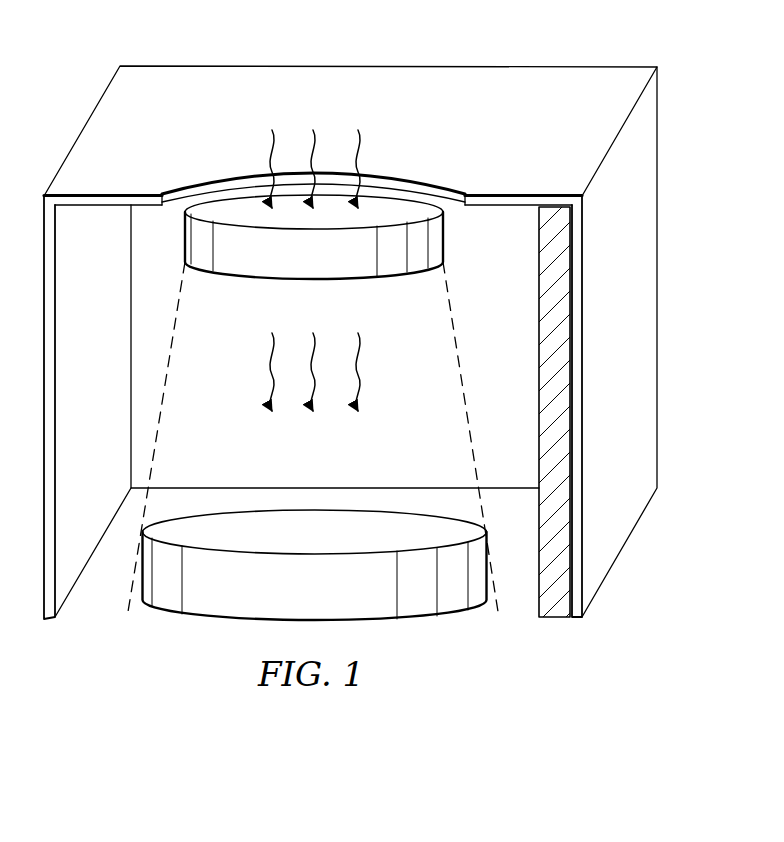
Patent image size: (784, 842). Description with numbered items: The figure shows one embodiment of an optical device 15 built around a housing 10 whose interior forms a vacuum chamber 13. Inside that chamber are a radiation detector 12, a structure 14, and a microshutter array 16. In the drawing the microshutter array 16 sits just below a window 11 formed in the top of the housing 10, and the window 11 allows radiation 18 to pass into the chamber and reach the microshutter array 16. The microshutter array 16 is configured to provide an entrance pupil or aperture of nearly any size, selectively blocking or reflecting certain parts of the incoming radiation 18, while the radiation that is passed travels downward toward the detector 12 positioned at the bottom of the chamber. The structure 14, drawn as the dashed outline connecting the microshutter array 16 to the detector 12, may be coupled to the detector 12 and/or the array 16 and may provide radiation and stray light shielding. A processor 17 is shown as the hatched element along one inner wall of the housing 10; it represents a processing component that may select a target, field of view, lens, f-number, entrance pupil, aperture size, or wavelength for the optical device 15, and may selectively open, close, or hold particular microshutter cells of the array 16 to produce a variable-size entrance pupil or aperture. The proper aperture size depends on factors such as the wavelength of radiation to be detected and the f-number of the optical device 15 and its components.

The housing 10 is at (657, 375).
The window 11 is at (212, 160).
The radiation detector 12 is at (202, 615).
The vacuum chamber 13 is at (521, 331).
The structure 14 is at (468, 418).
The optical device 15 is at (703, 108).
The microshutter array 16 is at (443, 233).
The processor 17 is at (542, 450).
The radiation 18 is at (361, 135).